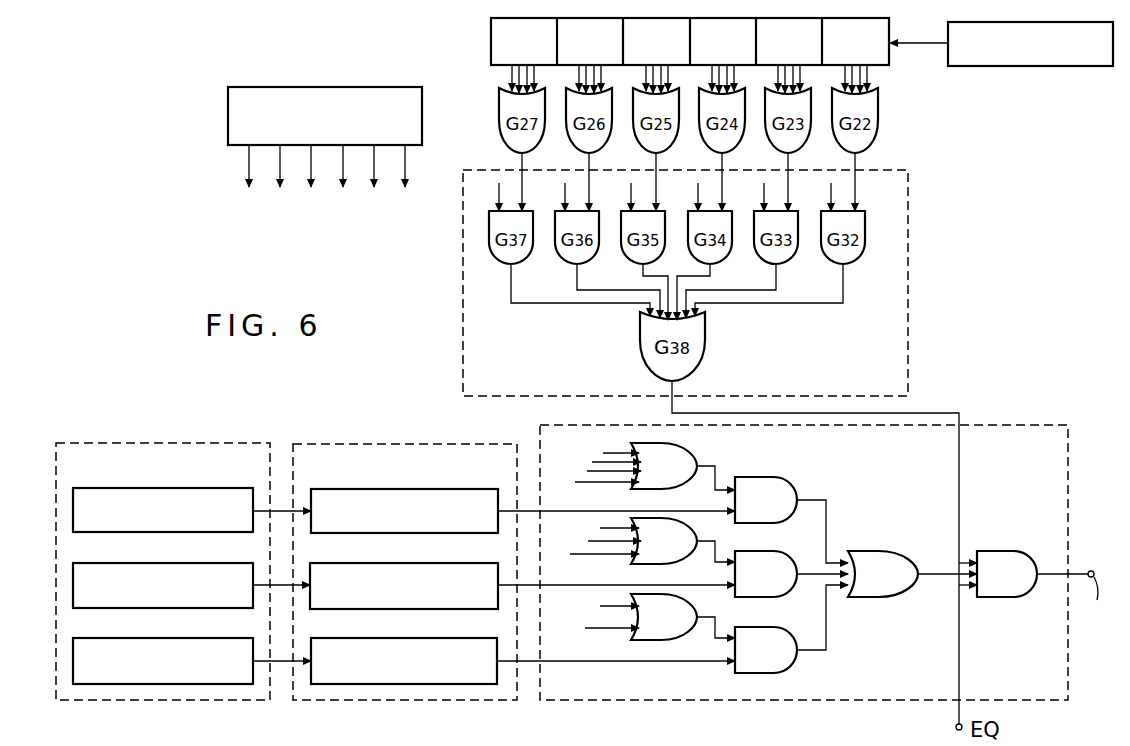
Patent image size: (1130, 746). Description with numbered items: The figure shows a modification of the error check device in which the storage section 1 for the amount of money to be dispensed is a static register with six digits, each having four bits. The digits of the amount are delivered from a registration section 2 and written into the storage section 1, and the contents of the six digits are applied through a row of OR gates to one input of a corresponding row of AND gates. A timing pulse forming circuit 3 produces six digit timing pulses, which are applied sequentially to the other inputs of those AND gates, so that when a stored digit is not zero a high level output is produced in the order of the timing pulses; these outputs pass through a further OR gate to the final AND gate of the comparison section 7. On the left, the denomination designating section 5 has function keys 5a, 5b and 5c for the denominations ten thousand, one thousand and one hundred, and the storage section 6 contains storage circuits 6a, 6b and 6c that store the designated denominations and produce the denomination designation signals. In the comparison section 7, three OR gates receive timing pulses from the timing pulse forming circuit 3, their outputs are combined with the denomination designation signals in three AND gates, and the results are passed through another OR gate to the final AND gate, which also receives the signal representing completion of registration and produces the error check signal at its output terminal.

The storage section 1 is at (716, 19).
The registration section 2 is at (1010, 22).
The timing pulse forming circuit 3 is at (310, 87).
The denomination designating section 5 is at (176, 443).
The function key 5a is at (136, 474).
The function key 5b is at (136, 549).
The function key 5c is at (136, 624).
The storage section 6 is at (390, 444).
The storage circuit 6a is at (376, 474).
The storage circuit 6b is at (376, 549).
The storage circuit 6c is at (376, 624).
The comparison section 7 is at (995, 427).